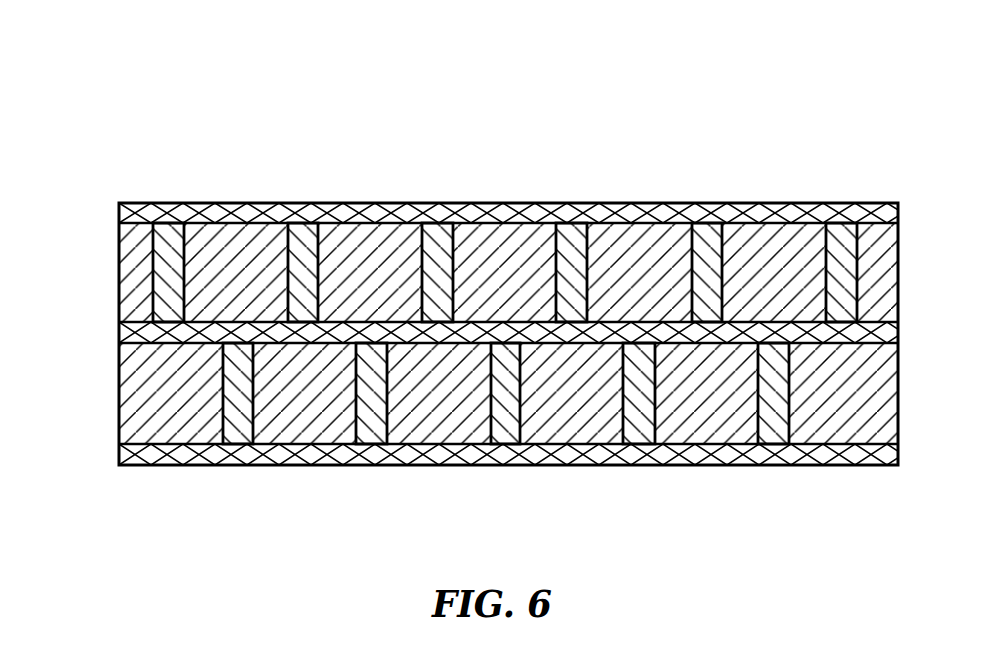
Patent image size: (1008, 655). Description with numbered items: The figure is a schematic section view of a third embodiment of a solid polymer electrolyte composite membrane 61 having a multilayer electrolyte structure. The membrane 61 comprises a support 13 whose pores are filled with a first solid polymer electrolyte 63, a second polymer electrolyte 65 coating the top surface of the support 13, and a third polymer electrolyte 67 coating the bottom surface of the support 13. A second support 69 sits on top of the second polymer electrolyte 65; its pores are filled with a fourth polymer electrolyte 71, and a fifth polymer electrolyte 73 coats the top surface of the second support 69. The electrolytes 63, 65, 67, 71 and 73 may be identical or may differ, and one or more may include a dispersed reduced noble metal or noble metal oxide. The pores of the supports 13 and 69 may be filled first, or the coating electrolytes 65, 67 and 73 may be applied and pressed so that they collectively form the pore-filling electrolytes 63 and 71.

The composite membrane 61 is at (476, 118).
The fifth polymer electrolyte 73 is at (614, 210).
The second polymer electrolyte 65 is at (120, 333).
The third polymer electrolyte 67 is at (717, 462).
The second support 69 is at (742, 238).
The fourth polymer electrolyte 71 is at (298, 240).
The support 13 is at (832, 430).
The first solid polymer electrolyte 63 is at (507, 435).